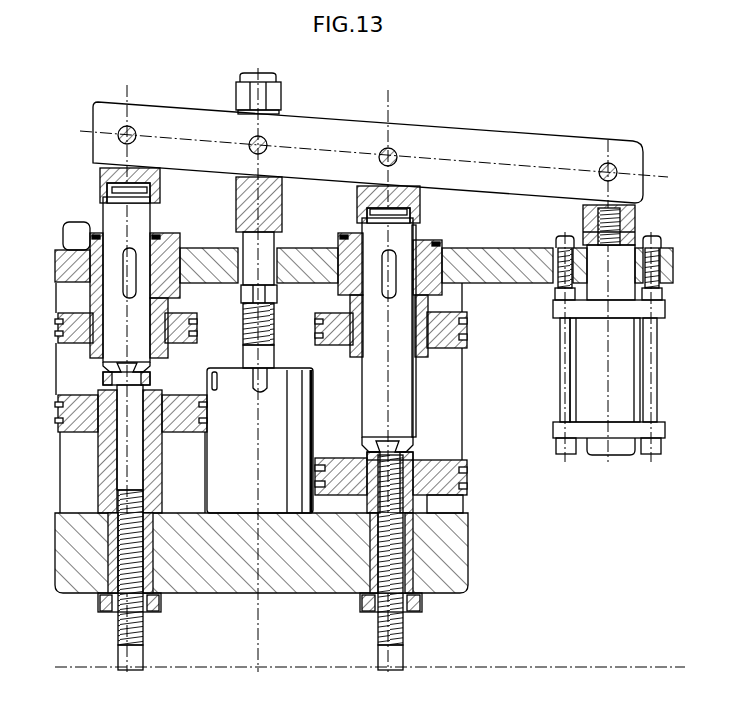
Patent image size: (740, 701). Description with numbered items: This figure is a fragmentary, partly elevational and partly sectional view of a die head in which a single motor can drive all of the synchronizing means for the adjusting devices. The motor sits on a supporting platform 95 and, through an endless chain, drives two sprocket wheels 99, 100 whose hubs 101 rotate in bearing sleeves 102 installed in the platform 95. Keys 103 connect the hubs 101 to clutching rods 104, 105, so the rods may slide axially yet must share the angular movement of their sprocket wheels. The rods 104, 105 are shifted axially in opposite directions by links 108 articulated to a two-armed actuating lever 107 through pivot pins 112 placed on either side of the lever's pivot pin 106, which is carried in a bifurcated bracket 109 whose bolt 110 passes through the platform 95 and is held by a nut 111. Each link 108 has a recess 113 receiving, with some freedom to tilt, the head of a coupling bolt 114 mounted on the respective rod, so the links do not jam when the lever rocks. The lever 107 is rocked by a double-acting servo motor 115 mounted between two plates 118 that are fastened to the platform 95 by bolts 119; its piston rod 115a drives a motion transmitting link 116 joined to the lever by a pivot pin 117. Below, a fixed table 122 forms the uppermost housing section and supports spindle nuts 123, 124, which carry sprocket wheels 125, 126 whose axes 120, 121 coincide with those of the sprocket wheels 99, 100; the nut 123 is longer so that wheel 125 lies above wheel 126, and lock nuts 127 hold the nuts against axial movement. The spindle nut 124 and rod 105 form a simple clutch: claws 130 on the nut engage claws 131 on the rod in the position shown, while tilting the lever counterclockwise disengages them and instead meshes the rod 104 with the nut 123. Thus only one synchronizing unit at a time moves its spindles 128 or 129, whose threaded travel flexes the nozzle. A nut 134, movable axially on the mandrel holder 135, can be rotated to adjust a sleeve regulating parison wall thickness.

The supporting platform 95 is at (508, 260).
The sprocket wheel 99 is at (80, 343).
The sprocket wheel 100 is at (467, 320).
The hub 101 is at (88, 306).
The bearing sleeve 102 is at (84, 246).
The key 103 is at (128, 300).
The clutching rod 104 is at (150, 240).
The clutching rod 105 is at (375, 368).
The pivot pin 106 is at (266, 140).
The actuating lever 107 is at (491, 145).
The link 108 is at (357, 196).
The bifurcated bracket 109 is at (237, 210).
The bolt 110 is at (270, 262).
The nut 111 is at (277, 293).
The pivot pin 112 is at (389, 148).
The recess 113 is at (100, 190).
The coupling bolt 114 is at (150, 193).
The servo motor 115 is at (588, 383).
The piston rod 115a is at (635, 243).
The motion transmitting link 116 is at (633, 230).
The pivot pin 117 is at (602, 165).
The plate 118 is at (560, 425).
The bolt 119 is at (563, 355).
The axis 120 is at (118, 452).
The axis 121 is at (388, 394).
The fixed table 122 is at (220, 578).
The spindle nut 123 is at (107, 487).
The spindle nut 124 is at (430, 503).
The sprocket wheel 125 is at (189, 432).
The sprocket wheel 126 is at (330, 470).
The lock nut 127 is at (362, 612).
The spindle 128 is at (143, 656).
The spindle 129 is at (385, 655).
The claws 130 is at (410, 447).
The claws 131 is at (397, 443).
The nut 134 is at (224, 500).
The holder 135 is at (262, 358).